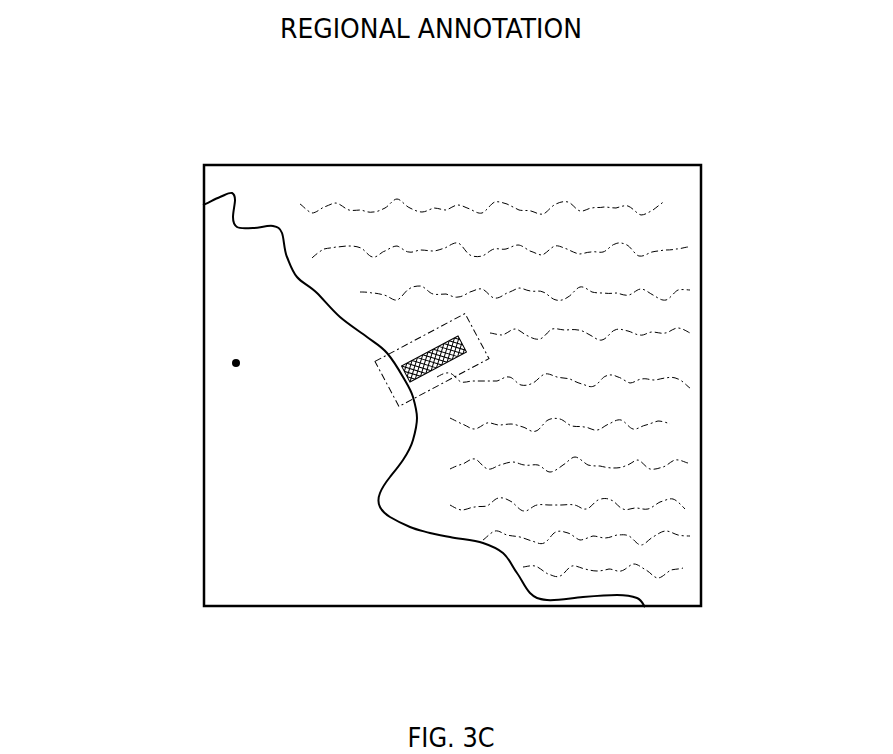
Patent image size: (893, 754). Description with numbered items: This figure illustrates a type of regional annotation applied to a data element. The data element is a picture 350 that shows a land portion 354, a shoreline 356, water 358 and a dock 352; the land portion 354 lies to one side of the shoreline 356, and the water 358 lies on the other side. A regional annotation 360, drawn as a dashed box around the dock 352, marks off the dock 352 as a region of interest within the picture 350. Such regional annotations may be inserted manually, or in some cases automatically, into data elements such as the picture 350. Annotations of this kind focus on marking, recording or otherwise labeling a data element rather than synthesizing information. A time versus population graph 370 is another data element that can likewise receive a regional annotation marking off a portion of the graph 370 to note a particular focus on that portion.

The picture 350 is at (237, 125).
The dock 352 is at (415, 356).
The land portion 354 is at (232, 362).
The shoreline 356 is at (508, 553).
The water 358 is at (545, 243).
The regional annotation 360 is at (398, 385).
The time vs. population graph 370 is at (187, 733).